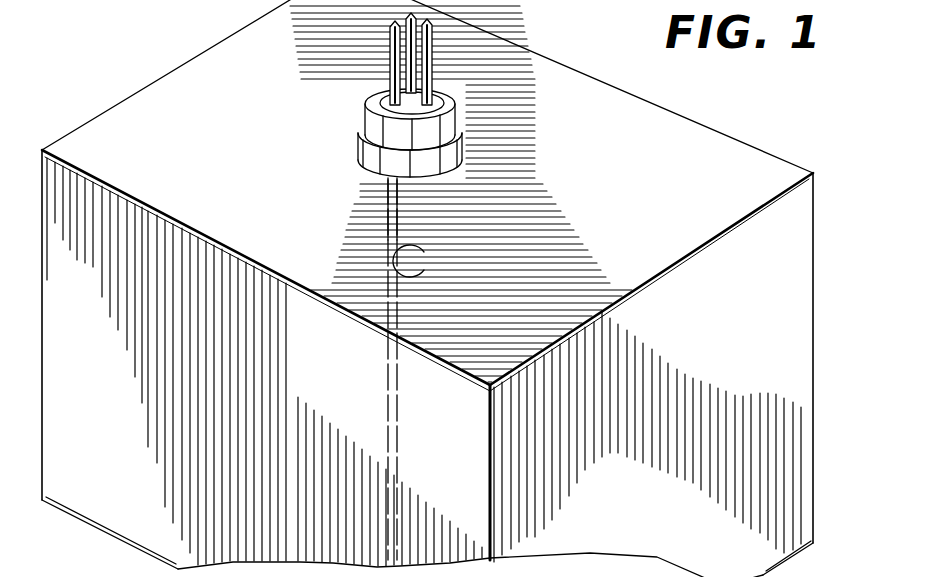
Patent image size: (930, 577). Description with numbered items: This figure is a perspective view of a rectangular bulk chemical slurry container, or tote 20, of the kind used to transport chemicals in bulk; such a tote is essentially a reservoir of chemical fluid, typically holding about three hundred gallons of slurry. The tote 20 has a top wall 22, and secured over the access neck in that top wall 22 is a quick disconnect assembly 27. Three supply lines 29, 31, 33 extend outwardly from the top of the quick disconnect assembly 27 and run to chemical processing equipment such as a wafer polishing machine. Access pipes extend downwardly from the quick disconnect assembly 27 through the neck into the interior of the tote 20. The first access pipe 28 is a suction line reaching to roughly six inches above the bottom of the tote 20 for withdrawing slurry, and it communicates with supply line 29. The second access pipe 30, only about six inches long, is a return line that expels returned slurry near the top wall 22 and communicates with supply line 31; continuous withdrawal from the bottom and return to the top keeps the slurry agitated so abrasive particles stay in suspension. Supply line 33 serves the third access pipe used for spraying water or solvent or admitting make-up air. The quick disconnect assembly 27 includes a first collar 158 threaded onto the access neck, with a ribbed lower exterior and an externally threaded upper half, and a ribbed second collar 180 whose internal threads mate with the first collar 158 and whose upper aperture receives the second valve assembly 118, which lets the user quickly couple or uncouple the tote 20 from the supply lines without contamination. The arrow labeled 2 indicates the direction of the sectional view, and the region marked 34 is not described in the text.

The section line indicator for FIG. 2 is at (404, 536).
The tote 20 is at (821, 241).
The top wall 22 is at (687, 133).
The quick disconnect assembly 27 is at (410, 95).
The first access pipe 28 is at (400, 428).
The supply line 29 is at (393, 63).
The second access pipe 30 is at (430, 208).
The supply line 31 is at (416, 41).
The supply line 33 is at (432, 62).
The pipe feature 34 is at (426, 262).
The second valve assembly 118 is at (437, 97).
The first collar 158 is at (463, 148).
The second collar 180 is at (370, 98).